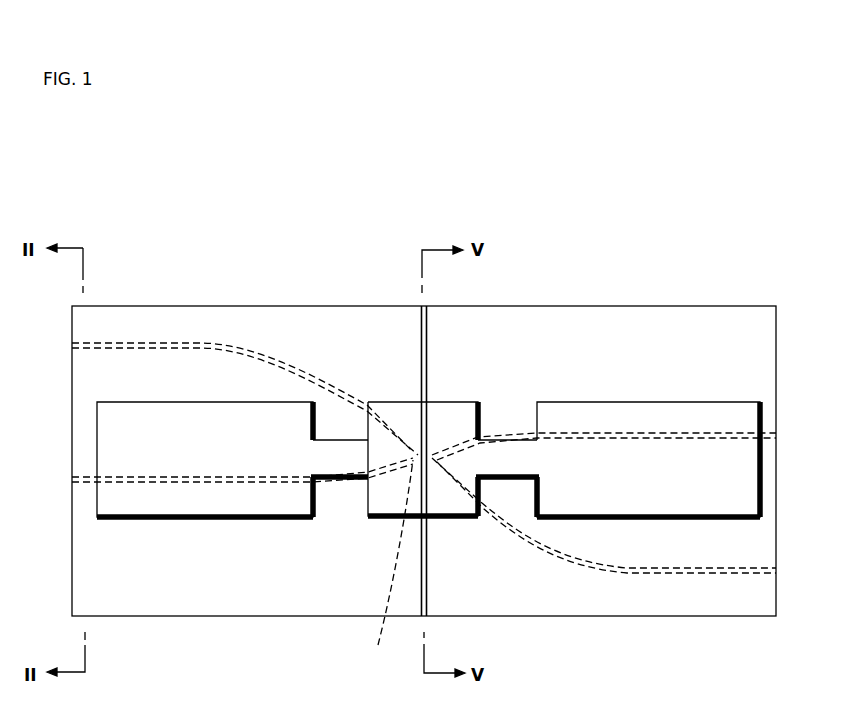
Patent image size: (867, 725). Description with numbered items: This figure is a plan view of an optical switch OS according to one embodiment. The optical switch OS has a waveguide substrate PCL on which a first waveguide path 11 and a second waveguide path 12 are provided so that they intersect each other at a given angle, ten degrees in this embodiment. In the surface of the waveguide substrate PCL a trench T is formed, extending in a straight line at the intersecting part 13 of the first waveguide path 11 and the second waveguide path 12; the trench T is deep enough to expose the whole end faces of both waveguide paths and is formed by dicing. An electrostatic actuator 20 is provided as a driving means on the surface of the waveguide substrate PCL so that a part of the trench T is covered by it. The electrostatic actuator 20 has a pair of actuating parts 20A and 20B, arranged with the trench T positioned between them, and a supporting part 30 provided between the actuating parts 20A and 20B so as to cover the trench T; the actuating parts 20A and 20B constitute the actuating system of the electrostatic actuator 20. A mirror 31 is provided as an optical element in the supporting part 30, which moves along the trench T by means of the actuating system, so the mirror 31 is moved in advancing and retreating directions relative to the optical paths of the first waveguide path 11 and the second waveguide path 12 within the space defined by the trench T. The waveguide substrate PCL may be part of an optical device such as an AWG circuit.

The first waveguide path 11 is at (207, 343).
The second waveguide path 12 is at (192, 480).
The intersecting part 13 is at (389, 567).
The electrostatic actuator 20 is at (368, 521).
The actuating part 20A is at (245, 518).
The actuating part 20B is at (612, 402).
The supporting part 30 is at (448, 402).
The mirror 31 is at (438, 519).
The trench T is at (421, 347).
The waveguide substrate PCL is at (720, 307).
The optical switch OS is at (677, 188).